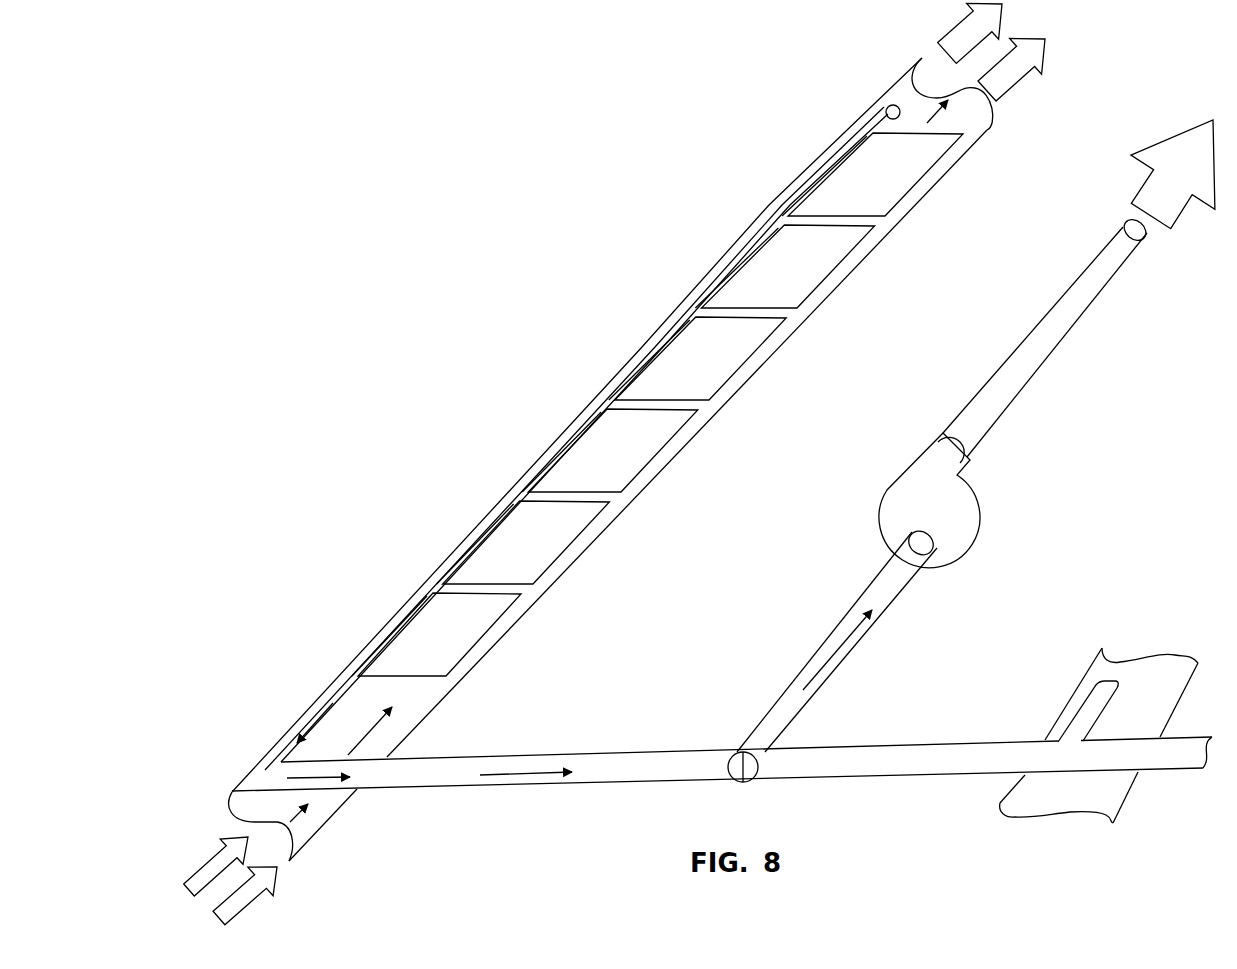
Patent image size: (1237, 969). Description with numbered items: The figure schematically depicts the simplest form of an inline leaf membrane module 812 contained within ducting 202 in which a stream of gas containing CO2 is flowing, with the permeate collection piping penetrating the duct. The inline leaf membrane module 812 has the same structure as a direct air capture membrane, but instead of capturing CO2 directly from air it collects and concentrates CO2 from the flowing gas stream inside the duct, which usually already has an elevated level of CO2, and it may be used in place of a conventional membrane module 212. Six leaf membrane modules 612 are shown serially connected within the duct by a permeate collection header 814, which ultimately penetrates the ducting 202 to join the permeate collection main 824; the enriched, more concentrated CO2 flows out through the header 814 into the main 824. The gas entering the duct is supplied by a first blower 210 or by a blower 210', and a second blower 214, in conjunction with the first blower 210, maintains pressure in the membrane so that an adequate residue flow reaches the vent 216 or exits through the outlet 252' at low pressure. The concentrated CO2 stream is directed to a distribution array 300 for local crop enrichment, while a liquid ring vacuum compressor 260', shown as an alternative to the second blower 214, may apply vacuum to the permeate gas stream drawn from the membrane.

The inline leaf membrane module 812 is at (652, 176).
The membrane module 212 is at (627, 346).
The leaf membrane module 612 is at (871, 201).
The permeate collection piping header 814 is at (886, 110).
The permeate collection main 824 is at (640, 747).
The second blower 214 is at (985, 498).
The liquid ring (vacuum) compressor 260' is at (951, 450).
The distribution array 300 is at (1079, 288).
The ducting 202 is at (1053, 714).
The vent 216 is at (971, 33).
The outlet 252' is at (1011, 70).
The first blower 210 is at (216, 866).
The blower 210' is at (245, 896).